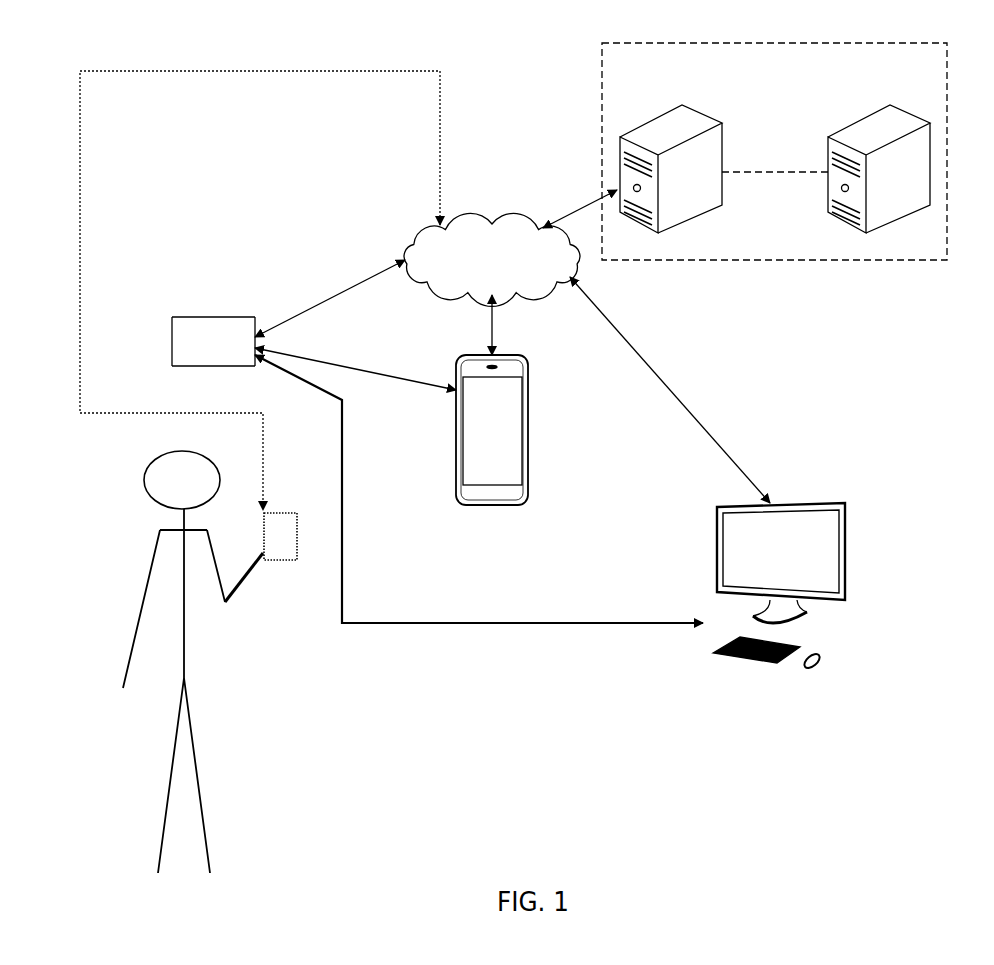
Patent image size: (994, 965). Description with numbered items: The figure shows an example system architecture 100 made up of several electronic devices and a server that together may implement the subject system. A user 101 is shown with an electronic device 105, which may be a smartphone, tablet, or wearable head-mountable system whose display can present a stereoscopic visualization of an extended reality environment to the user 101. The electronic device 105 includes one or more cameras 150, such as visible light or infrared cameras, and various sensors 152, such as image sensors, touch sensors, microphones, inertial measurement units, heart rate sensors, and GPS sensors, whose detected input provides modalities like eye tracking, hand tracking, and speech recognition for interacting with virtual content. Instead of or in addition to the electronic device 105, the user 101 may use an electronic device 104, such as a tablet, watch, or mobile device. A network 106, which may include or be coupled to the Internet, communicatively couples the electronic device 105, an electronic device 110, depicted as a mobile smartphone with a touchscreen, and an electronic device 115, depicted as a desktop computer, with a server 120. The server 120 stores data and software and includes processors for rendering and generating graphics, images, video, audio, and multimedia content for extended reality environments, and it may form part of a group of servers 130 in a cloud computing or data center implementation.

The system architecture 100 is at (205, 17).
The user 101 is at (160, 539).
The electronic device 104 is at (293, 513).
The electronic device 105 is at (215, 286).
The network 106 is at (490, 223).
The electronic device 110 is at (490, 507).
The electronic device 115 is at (787, 672).
The server 120 is at (648, 122).
The group of servers 130 is at (736, 151).
The cameras 150 is at (215, 317).
The sensors 152 is at (173, 317).